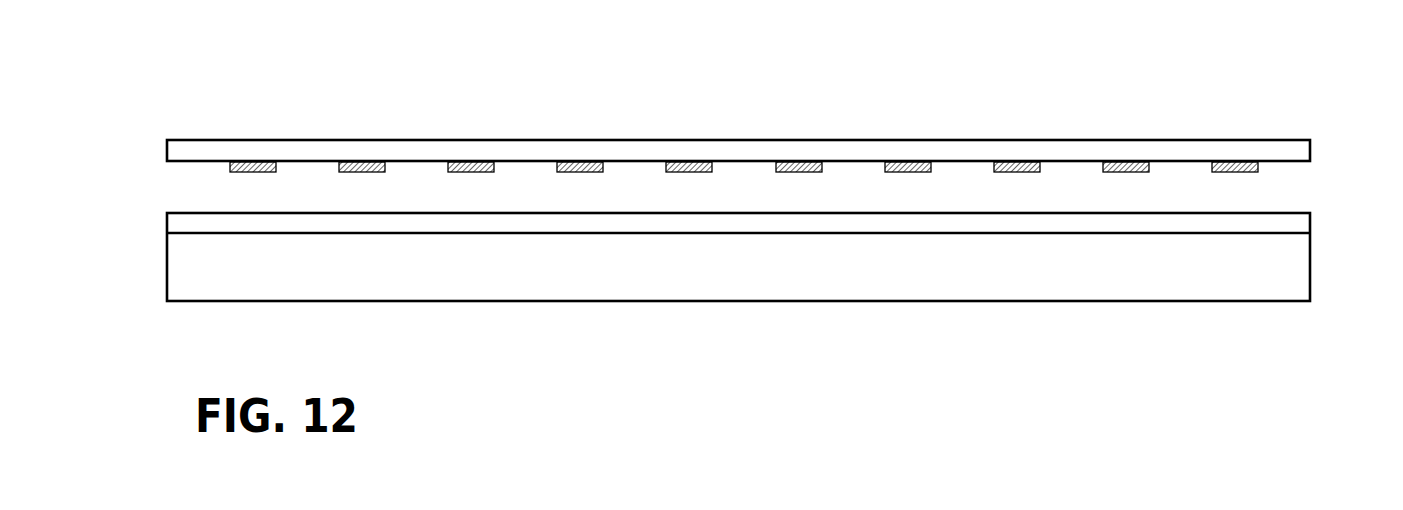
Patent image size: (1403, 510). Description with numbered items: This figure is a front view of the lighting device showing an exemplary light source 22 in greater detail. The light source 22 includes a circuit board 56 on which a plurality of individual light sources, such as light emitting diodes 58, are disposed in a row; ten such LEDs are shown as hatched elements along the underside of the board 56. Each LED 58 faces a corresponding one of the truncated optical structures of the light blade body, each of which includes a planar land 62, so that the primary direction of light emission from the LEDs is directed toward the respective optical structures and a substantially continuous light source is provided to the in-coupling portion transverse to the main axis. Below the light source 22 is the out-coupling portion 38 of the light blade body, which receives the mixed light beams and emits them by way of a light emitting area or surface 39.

The light source 22 is at (154, 117).
The circuit board 56 is at (1303, 152).
The light emitting diode 58 is at (712, 186).
The planar land 62 is at (1296, 212).
The out-coupling portion 38 is at (773, 249).
The light emitting area or surface 39 is at (757, 279).